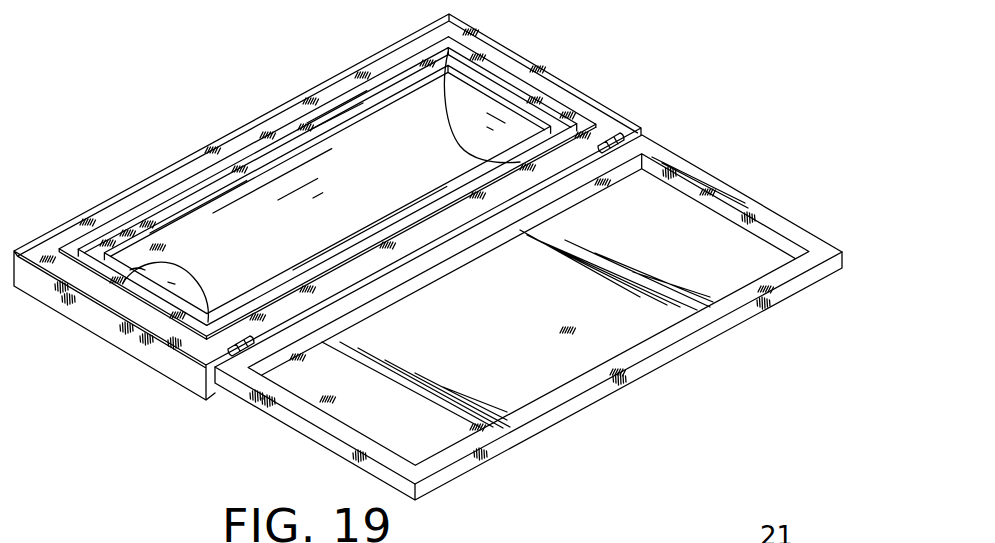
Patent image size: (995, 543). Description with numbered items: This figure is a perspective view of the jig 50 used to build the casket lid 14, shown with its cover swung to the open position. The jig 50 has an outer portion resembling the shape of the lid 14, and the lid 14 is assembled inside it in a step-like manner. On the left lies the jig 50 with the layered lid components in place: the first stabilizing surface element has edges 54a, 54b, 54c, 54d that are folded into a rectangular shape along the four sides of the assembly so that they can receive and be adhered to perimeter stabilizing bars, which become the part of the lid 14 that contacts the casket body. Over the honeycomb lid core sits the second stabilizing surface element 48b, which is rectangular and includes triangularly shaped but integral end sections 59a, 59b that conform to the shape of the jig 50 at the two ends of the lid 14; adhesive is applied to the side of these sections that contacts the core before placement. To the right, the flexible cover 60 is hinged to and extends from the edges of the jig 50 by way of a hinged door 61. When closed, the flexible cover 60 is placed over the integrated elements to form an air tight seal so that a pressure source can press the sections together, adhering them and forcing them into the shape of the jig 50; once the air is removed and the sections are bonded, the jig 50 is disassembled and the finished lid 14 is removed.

The lid 14 is at (473, 88).
The second stabilizing surface element 48b is at (313, 170).
The jig 50 is at (557, 80).
The edge 54a is at (577, 115).
The edge 54b is at (398, 72).
The edge 54c is at (163, 307).
The edge 54d is at (418, 218).
The end section 59a is at (497, 100).
The end section 59b is at (145, 270).
The flexible cover 60 is at (512, 400).
The hinged door 61 is at (328, 448).